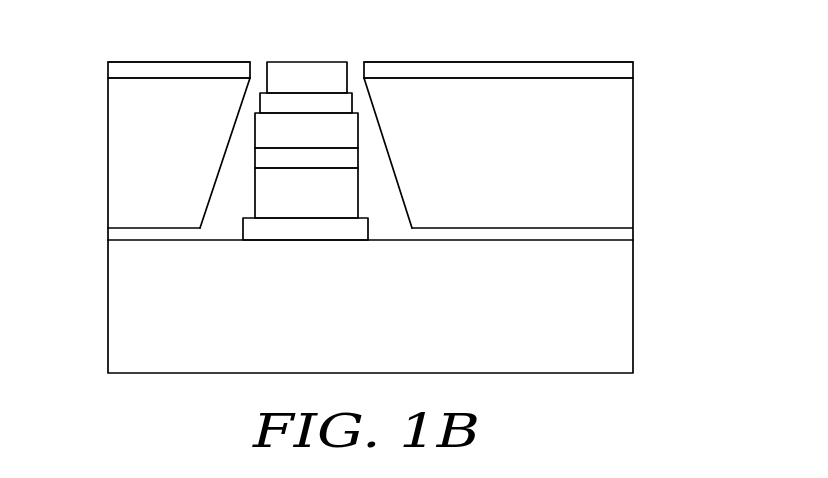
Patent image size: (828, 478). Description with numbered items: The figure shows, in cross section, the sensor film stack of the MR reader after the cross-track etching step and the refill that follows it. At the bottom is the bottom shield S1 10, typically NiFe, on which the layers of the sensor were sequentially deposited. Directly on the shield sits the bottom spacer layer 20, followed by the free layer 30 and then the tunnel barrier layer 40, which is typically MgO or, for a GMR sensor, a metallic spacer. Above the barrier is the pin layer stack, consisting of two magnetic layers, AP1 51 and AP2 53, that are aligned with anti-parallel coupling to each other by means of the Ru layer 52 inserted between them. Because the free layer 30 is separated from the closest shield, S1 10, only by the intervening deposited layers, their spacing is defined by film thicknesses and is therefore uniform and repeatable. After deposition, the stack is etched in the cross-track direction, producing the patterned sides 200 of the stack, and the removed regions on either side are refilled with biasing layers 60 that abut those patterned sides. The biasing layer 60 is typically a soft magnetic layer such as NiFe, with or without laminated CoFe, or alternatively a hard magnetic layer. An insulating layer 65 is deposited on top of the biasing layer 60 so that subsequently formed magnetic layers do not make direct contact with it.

The bottom shield S1 10 is at (618, 307).
The bottom spacer layer 20 is at (265, 228).
The free layer 30 is at (265, 202).
The tunnel barrier layer 40 is at (265, 158).
The AP1 layer 51 is at (265, 137).
The Ru layer 52 is at (265, 103).
The AP2 layer 53 is at (305, 70).
The biasing layer 60 is at (618, 157).
The insulating layer 65 is at (618, 73).
The patterned sides of the stack 200 is at (372, 157).